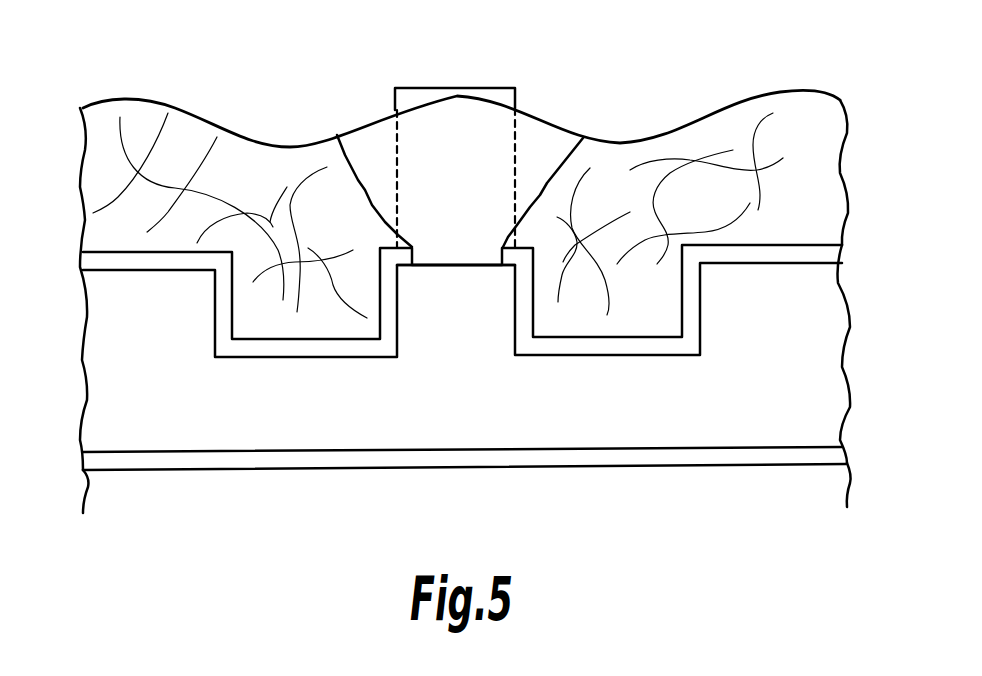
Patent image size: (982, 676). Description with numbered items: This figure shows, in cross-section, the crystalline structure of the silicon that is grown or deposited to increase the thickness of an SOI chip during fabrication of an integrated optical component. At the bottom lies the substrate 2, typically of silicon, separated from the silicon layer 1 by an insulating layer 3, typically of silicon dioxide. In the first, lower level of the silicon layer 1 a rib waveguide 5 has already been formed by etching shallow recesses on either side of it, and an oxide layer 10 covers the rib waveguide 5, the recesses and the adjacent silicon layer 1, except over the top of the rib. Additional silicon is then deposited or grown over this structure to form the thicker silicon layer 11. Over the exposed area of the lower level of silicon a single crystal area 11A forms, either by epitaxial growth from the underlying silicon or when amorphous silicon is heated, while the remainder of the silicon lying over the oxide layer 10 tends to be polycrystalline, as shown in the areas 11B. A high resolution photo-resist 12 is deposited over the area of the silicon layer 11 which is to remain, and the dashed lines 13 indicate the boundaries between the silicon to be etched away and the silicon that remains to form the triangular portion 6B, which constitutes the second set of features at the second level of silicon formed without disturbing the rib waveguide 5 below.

The silicon layer 1 is at (107, 380).
The substrate 2 is at (167, 514).
The insulating layer 3 is at (97, 463).
The rib waveguide 5 is at (467, 317).
The triangular portion 6B is at (471, 194).
The oxide layer 10 is at (812, 244).
The silicon layer 11 is at (807, 110).
The single crystal area 11A is at (350, 143).
The polycrystalline areas 11B is at (185, 128).
The photo-resist 12 is at (456, 88).
The dashed lines 13 is at (395, 140).